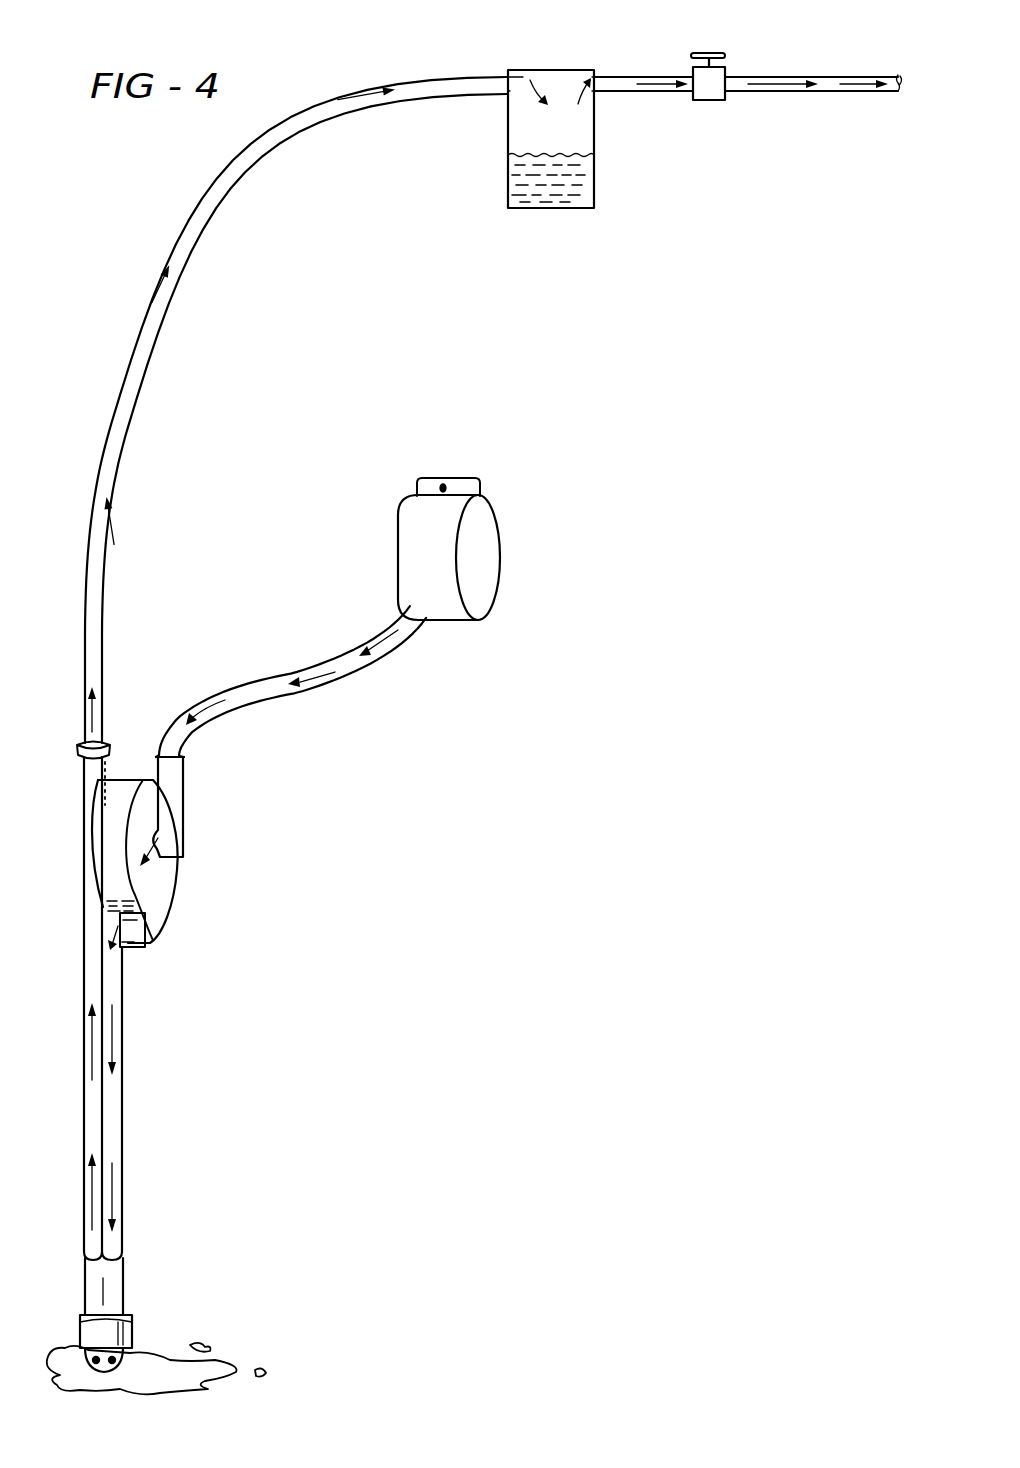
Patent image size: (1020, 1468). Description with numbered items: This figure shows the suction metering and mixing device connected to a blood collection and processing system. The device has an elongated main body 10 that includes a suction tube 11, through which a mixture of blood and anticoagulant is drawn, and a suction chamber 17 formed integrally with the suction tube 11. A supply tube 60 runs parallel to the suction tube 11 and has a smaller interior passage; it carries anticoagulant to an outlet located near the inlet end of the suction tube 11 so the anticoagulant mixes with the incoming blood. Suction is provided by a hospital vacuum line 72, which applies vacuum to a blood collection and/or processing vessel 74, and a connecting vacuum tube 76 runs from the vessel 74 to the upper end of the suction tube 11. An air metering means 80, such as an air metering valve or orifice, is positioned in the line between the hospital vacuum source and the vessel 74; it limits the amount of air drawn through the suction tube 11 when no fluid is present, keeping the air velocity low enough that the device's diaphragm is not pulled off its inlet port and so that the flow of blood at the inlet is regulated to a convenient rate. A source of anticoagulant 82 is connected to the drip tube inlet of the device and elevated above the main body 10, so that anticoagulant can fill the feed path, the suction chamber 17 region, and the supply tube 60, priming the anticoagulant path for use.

The main body 10 is at (79, 1202).
The suction tube 11 is at (90, 950).
The suction chamber 17 is at (176, 912).
The supply tube 60 is at (125, 1220).
The hospital vacuum line 72 is at (820, 77).
The blood collection and/or processing vessel 74 is at (533, 208).
The connecting vacuum tube 76 is at (140, 386).
The air metering means 80 is at (707, 100).
The source of anticoagulant 82 is at (450, 612).